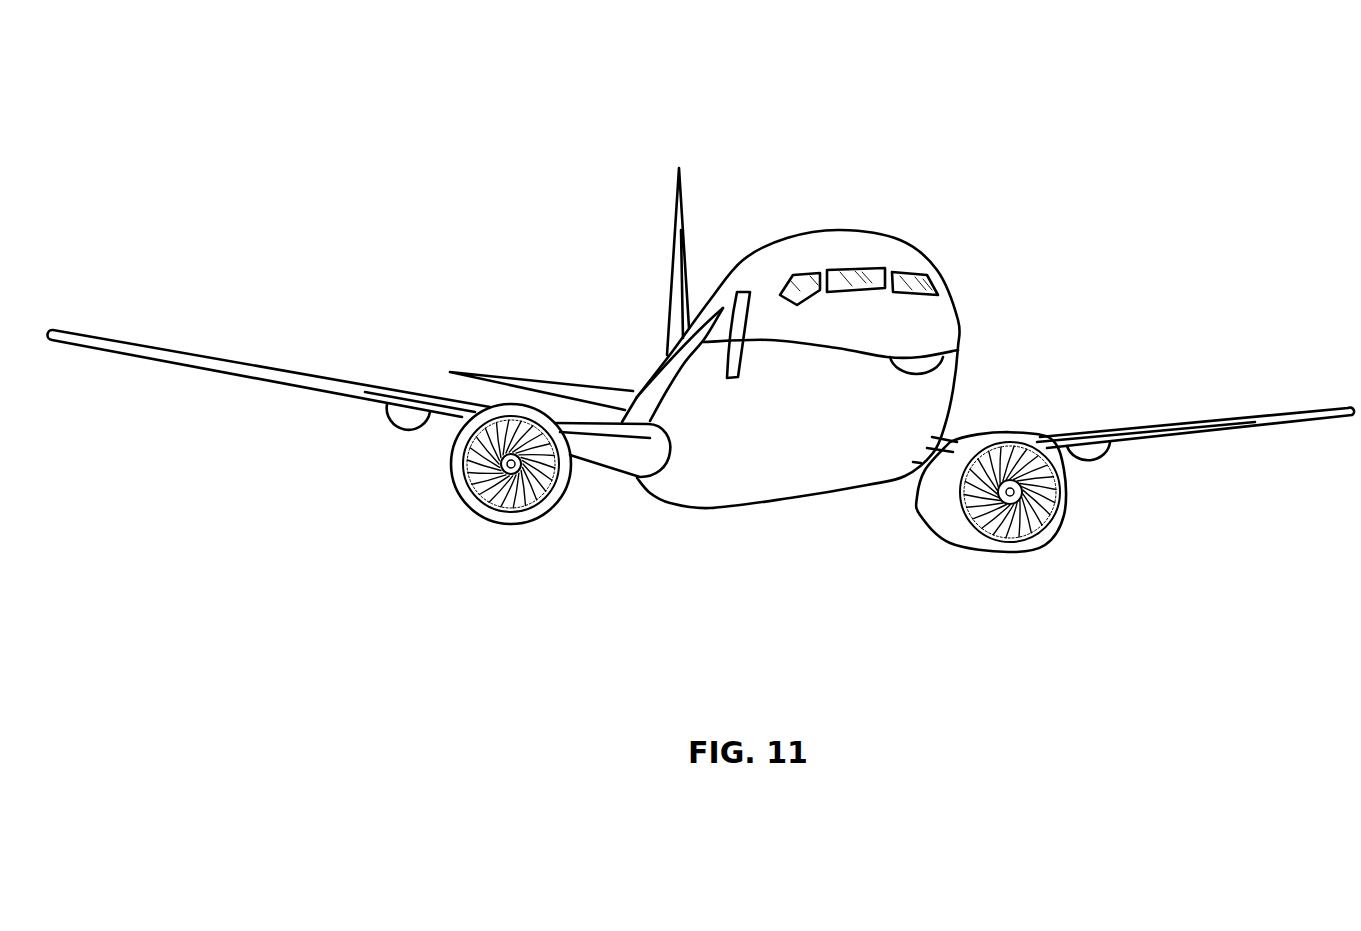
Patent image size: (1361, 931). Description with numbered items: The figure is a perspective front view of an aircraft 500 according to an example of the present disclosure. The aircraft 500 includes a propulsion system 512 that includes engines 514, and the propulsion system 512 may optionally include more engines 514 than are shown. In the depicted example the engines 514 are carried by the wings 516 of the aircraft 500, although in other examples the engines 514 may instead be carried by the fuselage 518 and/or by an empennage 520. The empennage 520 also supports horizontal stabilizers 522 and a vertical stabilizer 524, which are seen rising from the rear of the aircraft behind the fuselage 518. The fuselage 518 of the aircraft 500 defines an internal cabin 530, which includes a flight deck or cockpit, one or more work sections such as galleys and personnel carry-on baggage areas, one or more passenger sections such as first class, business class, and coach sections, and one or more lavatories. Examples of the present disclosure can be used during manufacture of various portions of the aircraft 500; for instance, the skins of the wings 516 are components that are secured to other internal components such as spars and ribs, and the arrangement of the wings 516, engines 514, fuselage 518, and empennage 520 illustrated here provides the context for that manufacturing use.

The aircraft 500 is at (375, 96).
The propulsion system 512 is at (1120, 541).
The engines 514 is at (503, 523).
The wings 516 is at (223, 360).
The fuselage 518 is at (958, 312).
The empennage 520 is at (662, 352).
The horizontal stabilizers 522 is at (500, 373).
The vertical stabilizer 524 is at (673, 217).
The internal cabin 530 is at (905, 272).